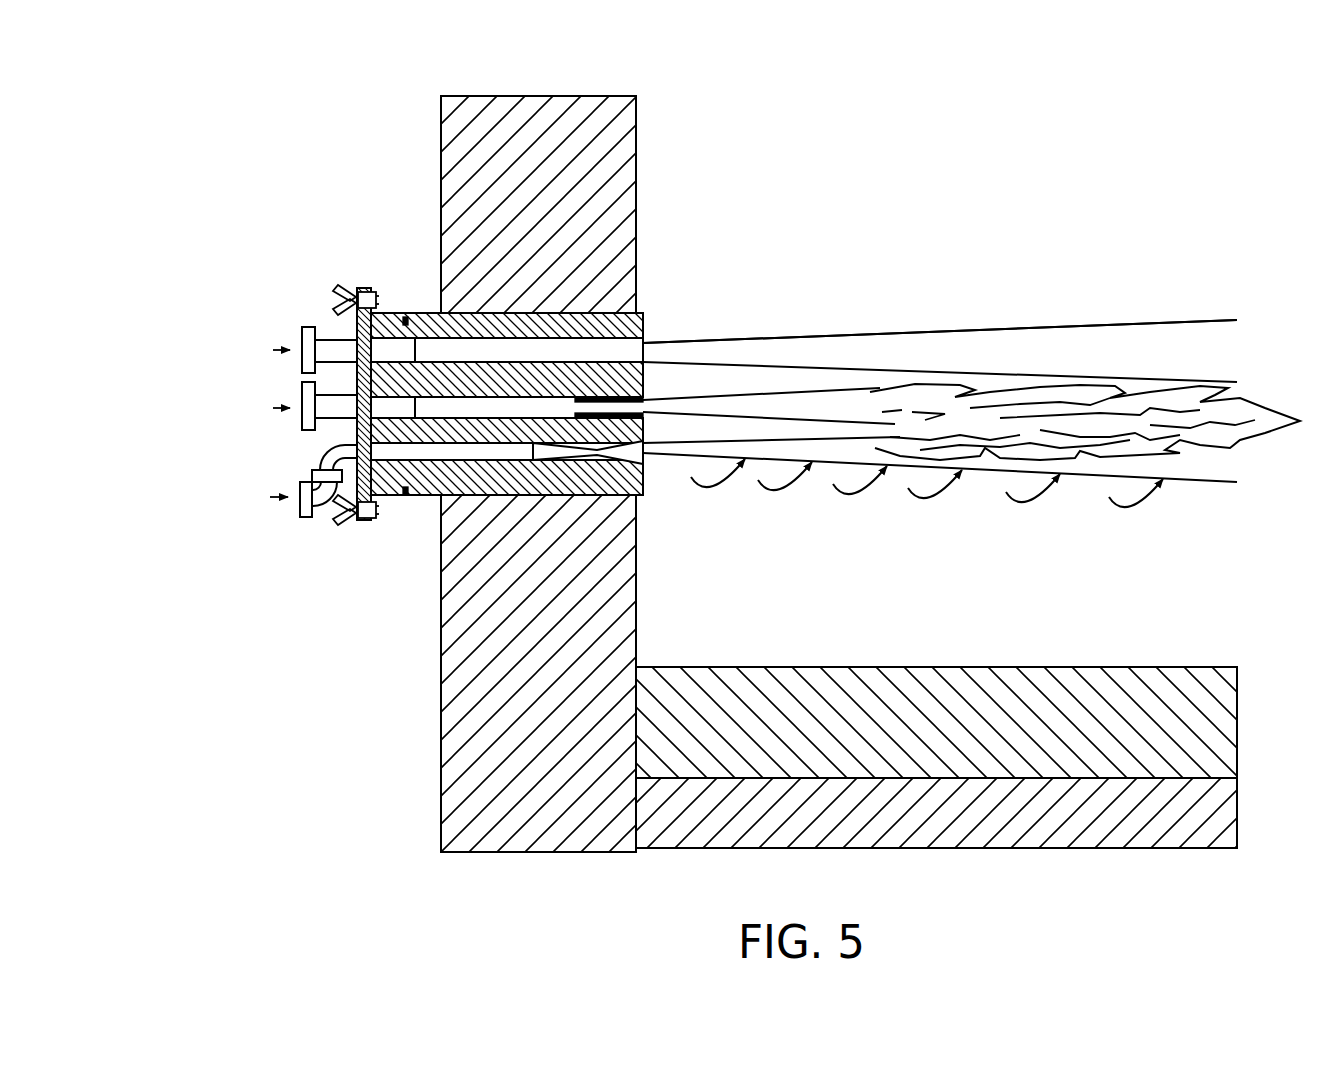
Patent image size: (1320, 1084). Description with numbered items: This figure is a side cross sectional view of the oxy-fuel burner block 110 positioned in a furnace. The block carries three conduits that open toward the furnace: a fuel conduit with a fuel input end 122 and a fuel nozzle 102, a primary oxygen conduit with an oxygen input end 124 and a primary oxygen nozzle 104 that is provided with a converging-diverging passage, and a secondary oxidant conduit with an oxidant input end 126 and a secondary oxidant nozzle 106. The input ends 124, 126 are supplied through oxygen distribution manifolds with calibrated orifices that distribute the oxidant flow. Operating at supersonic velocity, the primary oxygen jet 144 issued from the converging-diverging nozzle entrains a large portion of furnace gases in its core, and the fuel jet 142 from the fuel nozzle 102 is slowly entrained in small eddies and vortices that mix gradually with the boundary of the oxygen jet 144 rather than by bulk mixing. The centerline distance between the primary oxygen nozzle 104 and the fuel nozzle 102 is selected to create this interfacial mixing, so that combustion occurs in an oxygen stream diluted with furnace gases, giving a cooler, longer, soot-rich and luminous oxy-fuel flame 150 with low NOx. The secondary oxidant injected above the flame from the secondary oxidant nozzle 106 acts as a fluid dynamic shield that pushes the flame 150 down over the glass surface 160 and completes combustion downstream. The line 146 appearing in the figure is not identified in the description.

The fuel nozzle 102 is at (679, 343).
The primary oxygen nozzle 104 is at (650, 457).
The secondary oxidant nozzle 106 is at (643, 343).
The oxy-fuel burner block 110 is at (421, 480).
The fuel input end 122 is at (305, 418).
The oxygen input end 124 is at (310, 518).
The oxidant input end 126 is at (302, 342).
The fuel jet 142 is at (778, 350).
The primary oxygen jet 144 is at (740, 457).
The stream boundary 146 is at (727, 343).
The oxy-fuel flame 150 is at (1040, 405).
The glass surface 160 is at (980, 675).